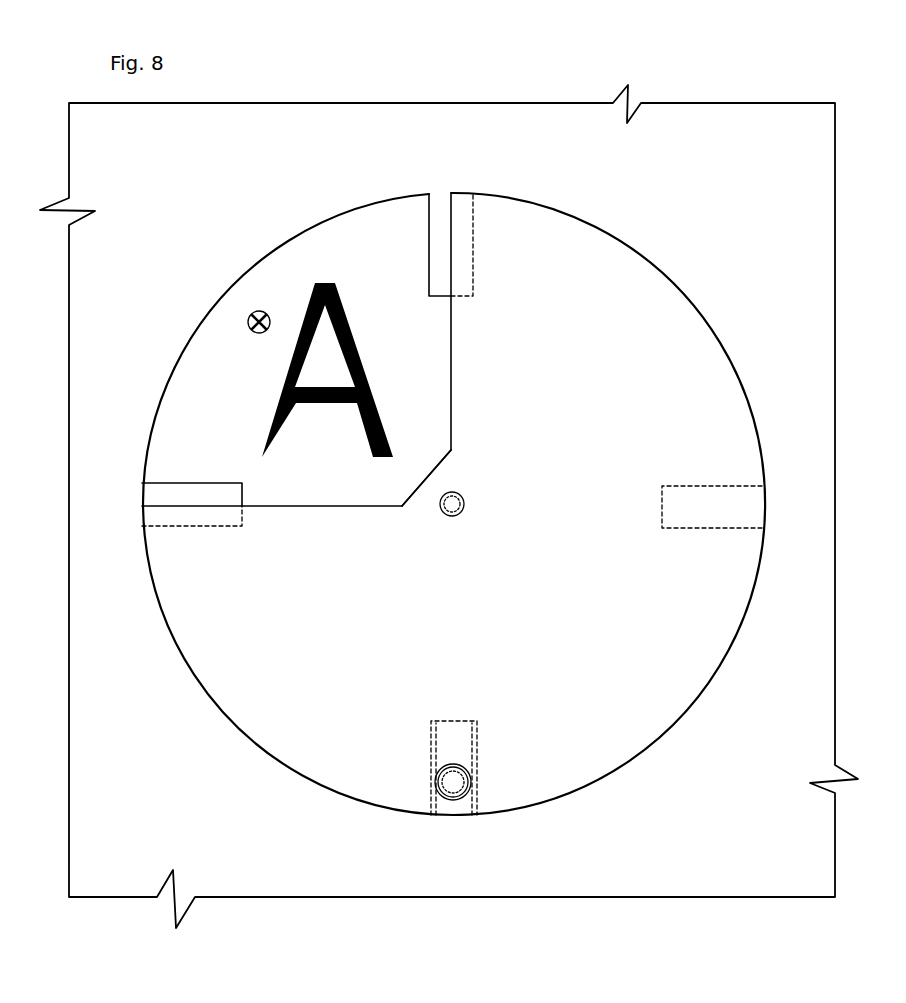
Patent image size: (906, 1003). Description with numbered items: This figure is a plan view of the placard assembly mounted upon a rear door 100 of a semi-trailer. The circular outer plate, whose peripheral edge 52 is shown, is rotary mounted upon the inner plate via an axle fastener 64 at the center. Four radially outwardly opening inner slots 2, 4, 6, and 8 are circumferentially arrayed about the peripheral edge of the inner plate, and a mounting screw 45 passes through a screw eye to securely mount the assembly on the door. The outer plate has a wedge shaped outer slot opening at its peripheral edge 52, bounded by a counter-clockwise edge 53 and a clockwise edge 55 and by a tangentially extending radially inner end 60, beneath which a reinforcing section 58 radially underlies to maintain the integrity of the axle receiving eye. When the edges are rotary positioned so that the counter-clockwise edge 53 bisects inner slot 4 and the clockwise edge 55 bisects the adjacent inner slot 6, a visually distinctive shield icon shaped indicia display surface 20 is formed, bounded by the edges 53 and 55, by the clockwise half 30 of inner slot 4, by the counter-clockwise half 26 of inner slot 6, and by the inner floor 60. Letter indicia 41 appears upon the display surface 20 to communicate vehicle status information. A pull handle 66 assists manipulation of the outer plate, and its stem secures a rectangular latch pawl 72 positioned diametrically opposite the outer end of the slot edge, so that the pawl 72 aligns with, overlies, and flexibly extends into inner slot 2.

The rear door 100 is at (676, 142).
The peripheral edge 52 is at (699, 313).
The indicia display surface 20 is at (218, 363).
The letter indicia 41 is at (327, 283).
The mounting screw 45 is at (258, 311).
The inner plate slot 6 is at (414, 221).
The counter-clockwise half of inner slot 26 is at (440, 225).
The clockwise edge of outer slot 55 is at (447, 352).
The radially inner end of slot 60 is at (418, 484).
The reinforcing section 58 is at (433, 492).
The counter-clockwise edge of outer slot 53 is at (272, 504).
The inner plate slot 4 is at (172, 543).
The clockwise half of inner slot 30 is at (172, 492).
The axle fastener 64 is at (461, 498).
The inner plate slot 8 is at (698, 513).
The inner plate slot 2 is at (482, 744).
The latch pawl 72 is at (443, 745).
The pull handle 66 is at (456, 789).